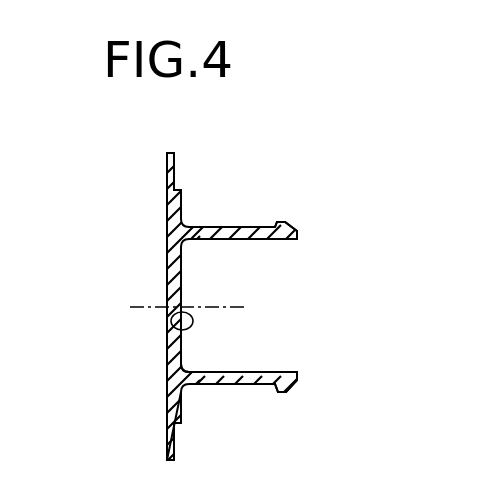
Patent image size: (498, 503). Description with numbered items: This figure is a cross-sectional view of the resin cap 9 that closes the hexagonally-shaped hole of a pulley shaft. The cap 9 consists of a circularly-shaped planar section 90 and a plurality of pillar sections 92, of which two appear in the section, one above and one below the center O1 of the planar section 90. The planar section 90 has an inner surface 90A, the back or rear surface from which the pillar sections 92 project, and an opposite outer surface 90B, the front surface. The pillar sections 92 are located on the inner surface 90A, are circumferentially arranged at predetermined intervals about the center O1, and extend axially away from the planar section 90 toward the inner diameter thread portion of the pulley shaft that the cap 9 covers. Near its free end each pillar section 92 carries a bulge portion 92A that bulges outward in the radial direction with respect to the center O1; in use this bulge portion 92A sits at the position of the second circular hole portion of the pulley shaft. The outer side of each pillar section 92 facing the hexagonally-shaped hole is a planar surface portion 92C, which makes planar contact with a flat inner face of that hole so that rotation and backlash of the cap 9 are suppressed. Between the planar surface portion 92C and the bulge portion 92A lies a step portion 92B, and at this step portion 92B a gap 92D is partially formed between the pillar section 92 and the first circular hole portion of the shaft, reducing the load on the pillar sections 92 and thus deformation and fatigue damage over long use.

The cap 9 is at (214, 165).
The planar section 90 is at (166, 257).
The center of the planar section O1 is at (171, 308).
The inner surface 90A is at (172, 331).
The outer surface 90B is at (167, 366).
The pillar section 92 is at (237, 240).
The bulge portion 92A is at (287, 226).
The step portion 92B is at (254, 228).
The planar surface portion 92C is at (199, 386).
The gap 92D is at (238, 386).